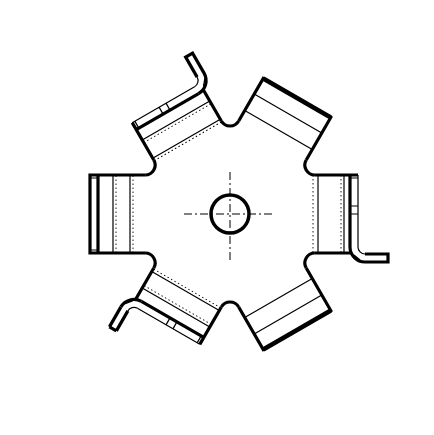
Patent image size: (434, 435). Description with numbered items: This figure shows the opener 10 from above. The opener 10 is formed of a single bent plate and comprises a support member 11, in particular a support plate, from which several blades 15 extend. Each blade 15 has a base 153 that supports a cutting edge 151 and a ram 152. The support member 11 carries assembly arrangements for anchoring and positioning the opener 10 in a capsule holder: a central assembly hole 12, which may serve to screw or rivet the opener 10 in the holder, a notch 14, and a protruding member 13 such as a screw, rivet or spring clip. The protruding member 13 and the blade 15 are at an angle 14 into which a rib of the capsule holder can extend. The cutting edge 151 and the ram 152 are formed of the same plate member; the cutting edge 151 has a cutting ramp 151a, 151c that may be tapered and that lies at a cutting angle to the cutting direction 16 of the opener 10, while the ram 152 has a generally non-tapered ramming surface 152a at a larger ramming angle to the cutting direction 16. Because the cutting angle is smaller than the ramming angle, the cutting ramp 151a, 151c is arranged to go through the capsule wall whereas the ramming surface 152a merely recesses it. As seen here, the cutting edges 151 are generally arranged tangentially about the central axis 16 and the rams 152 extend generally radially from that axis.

The opener 10 is at (86, 72).
The support member 11 is at (227, 155).
The assembly hole 12 is at (241, 233).
The protruding member 13 is at (287, 102).
The notch 14 is at (311, 163).
The blade 15 is at (137, 135).
The cutting direction 16 is at (229, 213).
The cutting edge 151 is at (186, 93).
The cutting ramp 151a is at (152, 316).
The cutting ramp 151c is at (128, 298).
The ram 152 is at (192, 56).
The ramming surface 152a is at (110, 329).
The base 153 is at (160, 143).